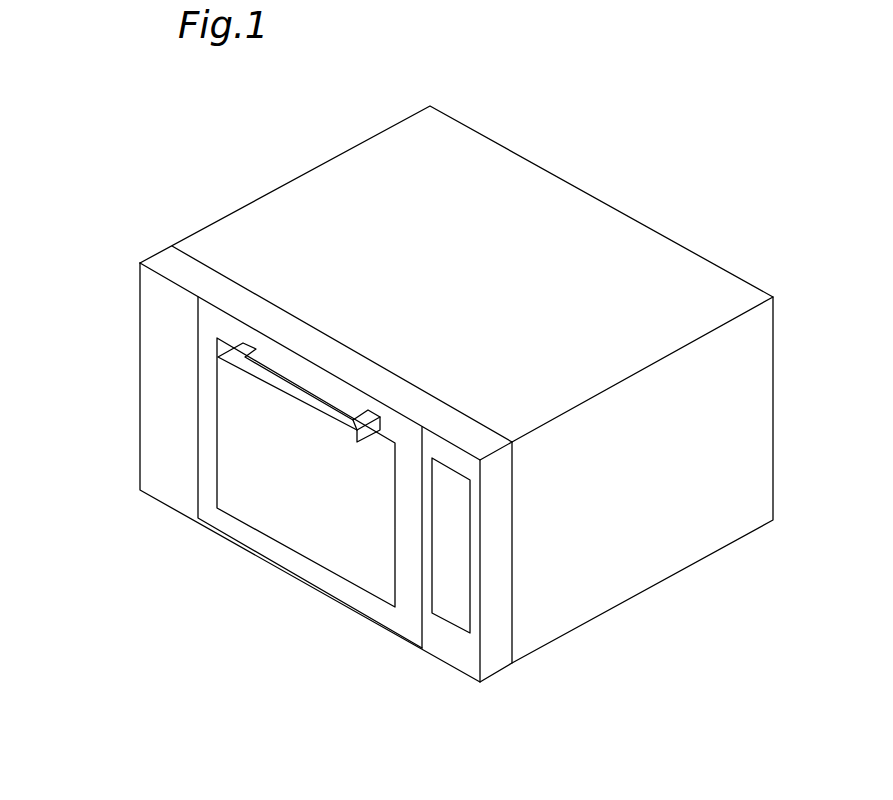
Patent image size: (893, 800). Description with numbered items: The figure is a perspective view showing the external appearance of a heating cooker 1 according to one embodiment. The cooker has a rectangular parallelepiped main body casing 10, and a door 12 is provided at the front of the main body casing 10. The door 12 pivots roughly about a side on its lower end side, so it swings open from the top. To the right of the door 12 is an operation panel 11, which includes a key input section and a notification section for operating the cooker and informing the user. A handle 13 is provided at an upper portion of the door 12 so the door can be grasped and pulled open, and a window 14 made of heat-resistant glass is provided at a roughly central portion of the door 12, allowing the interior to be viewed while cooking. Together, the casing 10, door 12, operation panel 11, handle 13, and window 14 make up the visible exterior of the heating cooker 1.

The heating cooker 1 is at (403, 413).
The main body casing 10 is at (241, 226).
The operation panel 11 is at (455, 588).
The door 12 is at (293, 563).
The handle 13 is at (245, 374).
The window 14 is at (283, 470).